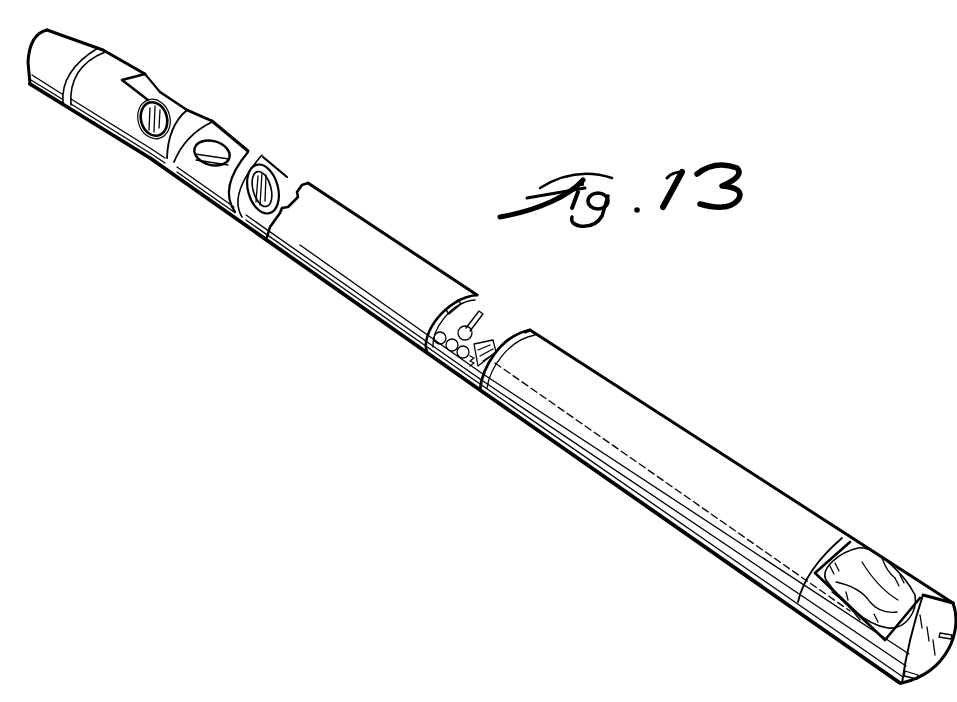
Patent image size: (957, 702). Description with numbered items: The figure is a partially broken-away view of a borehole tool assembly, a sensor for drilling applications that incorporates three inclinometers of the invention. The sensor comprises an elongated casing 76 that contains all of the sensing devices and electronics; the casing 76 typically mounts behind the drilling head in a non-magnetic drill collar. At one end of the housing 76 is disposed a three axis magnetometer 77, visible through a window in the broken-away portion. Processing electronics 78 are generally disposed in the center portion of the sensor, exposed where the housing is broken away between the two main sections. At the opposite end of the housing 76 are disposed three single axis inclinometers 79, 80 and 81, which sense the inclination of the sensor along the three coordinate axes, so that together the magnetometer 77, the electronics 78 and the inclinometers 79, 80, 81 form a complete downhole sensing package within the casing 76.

The casing 76 is at (637, 500).
The three axis magnetometer 77 is at (877, 562).
The processing electronics 78 is at (432, 358).
The single axis inclinometer 79 is at (278, 173).
The single axis inclinometer 80 is at (218, 148).
The single axis inclinometer 81 is at (153, 104).